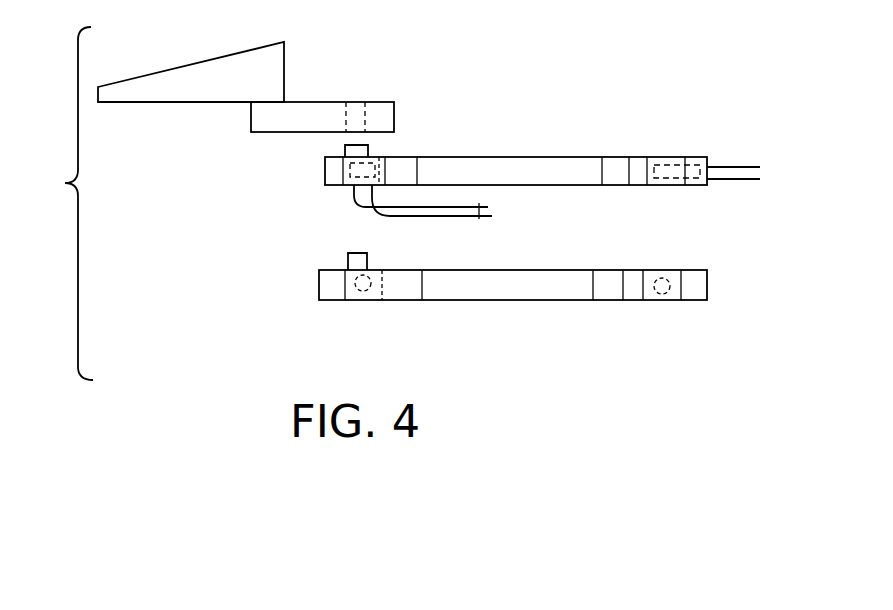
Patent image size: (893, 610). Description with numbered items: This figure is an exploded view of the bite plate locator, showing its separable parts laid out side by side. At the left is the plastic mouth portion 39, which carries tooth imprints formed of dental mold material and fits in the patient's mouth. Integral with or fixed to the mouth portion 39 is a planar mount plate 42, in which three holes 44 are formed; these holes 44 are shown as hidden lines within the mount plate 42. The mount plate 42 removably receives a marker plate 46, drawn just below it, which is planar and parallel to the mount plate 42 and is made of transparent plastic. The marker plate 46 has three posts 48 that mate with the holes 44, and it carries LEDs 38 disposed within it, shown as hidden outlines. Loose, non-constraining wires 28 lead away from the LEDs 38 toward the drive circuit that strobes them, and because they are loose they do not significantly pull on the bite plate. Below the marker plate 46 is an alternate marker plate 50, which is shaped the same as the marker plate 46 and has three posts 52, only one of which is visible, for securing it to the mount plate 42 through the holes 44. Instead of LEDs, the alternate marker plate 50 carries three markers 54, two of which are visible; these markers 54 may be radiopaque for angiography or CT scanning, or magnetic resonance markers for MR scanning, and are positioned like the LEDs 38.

The wires 28 is at (479, 219).
The LEDs 38 is at (352, 181).
The mouth portion 39 is at (233, 69).
The mount plate 42 is at (282, 135).
The holes 44 is at (346, 106).
The marker plate 46 is at (506, 166).
The posts 48 is at (368, 156).
The alternate marker plate 50 is at (490, 302).
The posts 52 is at (348, 255).
The markers 54 is at (373, 292).